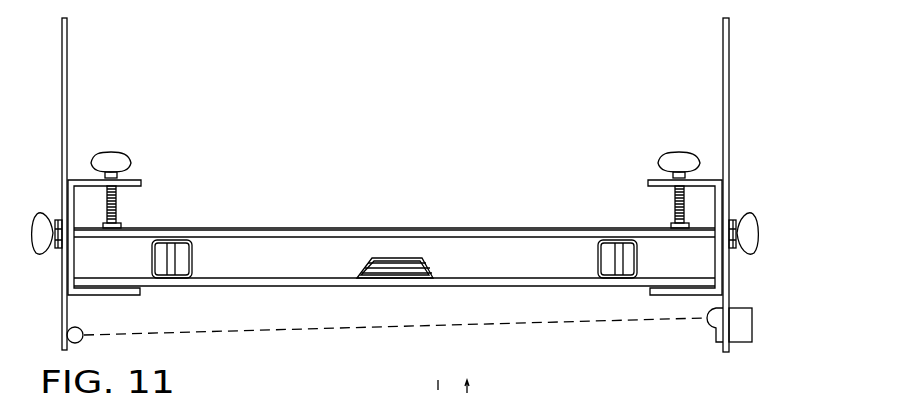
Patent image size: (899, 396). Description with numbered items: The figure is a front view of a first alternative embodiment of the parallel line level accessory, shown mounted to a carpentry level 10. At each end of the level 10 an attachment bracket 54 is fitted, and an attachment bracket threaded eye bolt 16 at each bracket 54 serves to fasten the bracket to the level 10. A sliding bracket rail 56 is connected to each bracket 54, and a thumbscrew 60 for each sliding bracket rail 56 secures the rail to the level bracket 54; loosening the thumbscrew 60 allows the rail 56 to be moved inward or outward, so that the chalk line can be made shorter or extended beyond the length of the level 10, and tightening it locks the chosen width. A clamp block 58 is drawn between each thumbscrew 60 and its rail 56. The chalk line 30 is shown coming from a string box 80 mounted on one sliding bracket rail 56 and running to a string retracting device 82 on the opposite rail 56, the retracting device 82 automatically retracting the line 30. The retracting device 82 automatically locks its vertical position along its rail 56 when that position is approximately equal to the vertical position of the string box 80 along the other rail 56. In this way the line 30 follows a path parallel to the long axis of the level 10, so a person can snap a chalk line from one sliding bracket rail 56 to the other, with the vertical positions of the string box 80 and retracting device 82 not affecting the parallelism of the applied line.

The level 10 is at (517, 247).
The attachment bracket threaded eye bolt 16 is at (113, 157).
The chalk line 30 is at (398, 326).
The attachment bracket 54 is at (136, 183).
The sliding bracket rail 56 is at (68, 97).
The clamp block 58 is at (58, 200).
The thumbscrew 60 is at (45, 252).
The string box 80 is at (721, 332).
The string retracting device 82 is at (77, 328).